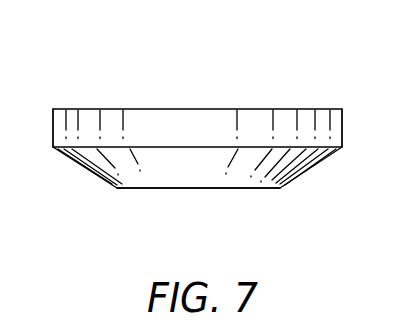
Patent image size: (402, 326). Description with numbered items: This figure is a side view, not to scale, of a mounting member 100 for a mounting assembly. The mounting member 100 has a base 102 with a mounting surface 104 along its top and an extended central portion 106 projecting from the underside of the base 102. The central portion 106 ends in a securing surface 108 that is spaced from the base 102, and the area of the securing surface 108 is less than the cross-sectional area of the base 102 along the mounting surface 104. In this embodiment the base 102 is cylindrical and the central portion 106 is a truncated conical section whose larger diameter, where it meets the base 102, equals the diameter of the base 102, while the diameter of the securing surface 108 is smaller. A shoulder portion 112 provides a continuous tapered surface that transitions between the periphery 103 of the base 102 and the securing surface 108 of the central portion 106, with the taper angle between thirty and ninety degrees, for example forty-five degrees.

The mounting member 100 is at (266, 82).
The base 102 is at (343, 126).
The periphery 103 is at (52, 132).
The mounting surface 104 is at (157, 108).
The extended central portion 106 is at (183, 189).
The securing surface 108 is at (230, 189).
The shoulder portion 112 is at (88, 170).